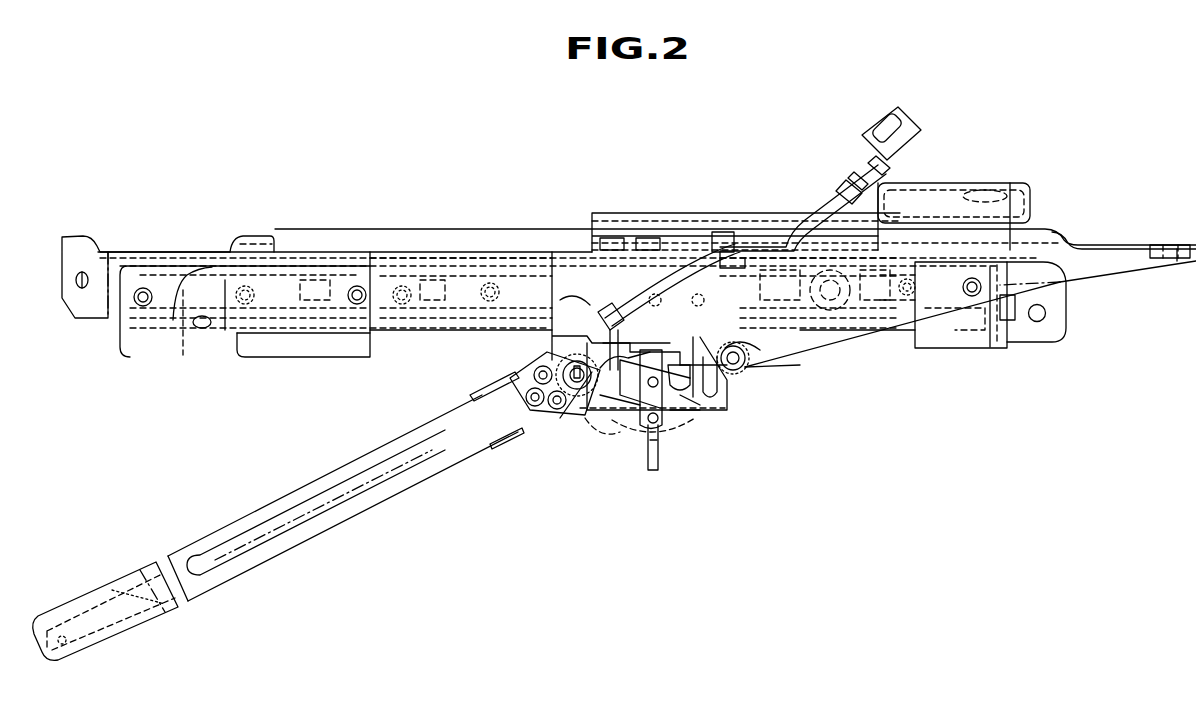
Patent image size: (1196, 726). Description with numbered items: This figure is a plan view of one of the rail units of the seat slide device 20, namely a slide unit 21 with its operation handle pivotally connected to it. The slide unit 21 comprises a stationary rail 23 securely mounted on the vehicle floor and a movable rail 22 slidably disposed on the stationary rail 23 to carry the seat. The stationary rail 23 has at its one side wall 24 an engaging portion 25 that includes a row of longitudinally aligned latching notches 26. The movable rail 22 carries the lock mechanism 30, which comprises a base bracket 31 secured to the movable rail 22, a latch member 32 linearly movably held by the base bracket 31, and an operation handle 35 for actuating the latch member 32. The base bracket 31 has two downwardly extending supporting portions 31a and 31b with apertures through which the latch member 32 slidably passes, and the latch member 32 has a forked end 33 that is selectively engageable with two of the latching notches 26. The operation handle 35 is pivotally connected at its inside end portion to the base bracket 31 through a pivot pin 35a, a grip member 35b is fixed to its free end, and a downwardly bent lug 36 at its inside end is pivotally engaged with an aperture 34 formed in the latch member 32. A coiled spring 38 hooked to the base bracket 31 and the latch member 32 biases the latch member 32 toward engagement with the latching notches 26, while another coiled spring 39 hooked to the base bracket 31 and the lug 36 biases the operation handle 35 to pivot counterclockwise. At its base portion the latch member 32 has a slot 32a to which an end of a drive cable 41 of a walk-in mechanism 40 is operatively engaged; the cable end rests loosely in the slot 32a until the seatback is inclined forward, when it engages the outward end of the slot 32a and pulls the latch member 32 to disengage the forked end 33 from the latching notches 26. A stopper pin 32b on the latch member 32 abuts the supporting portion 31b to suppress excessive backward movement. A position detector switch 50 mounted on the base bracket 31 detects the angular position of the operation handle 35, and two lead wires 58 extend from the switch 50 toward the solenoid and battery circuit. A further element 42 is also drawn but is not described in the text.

The seat slide device 20 is at (414, 192).
The slide unit 21 is at (487, 260).
The movable rail 22 is at (468, 331).
The stationary rail 23 is at (843, 322).
The side wall 24 is at (874, 306).
The engaging portion 25 is at (712, 300).
The latching notches 26 is at (665, 320).
The lock mechanism 30 is at (729, 414).
The base bracket 31 is at (730, 396).
The supporting portion 31a is at (600, 339).
The supporting portion 31b is at (613, 428).
The latch member 32 is at (647, 434).
The slot 32a is at (690, 400).
The stopper pin 32b is at (688, 416).
The forked end 33 is at (655, 296).
The aperture 34 is at (617, 422).
The operation handle 35 is at (415, 477).
The pivot pin 35a is at (563, 418).
The grip member 35b is at (122, 630).
The downwardly bent lug 36 is at (630, 316).
The coiled spring 38 is at (747, 370).
The coiled spring 39 is at (577, 412).
The walk-in mechanism 40 is at (663, 462).
The drive cable 41 is at (658, 454).
The clip 42 is at (648, 423).
The position detector switch 50 is at (512, 430).
The lead wires 58 is at (590, 305).